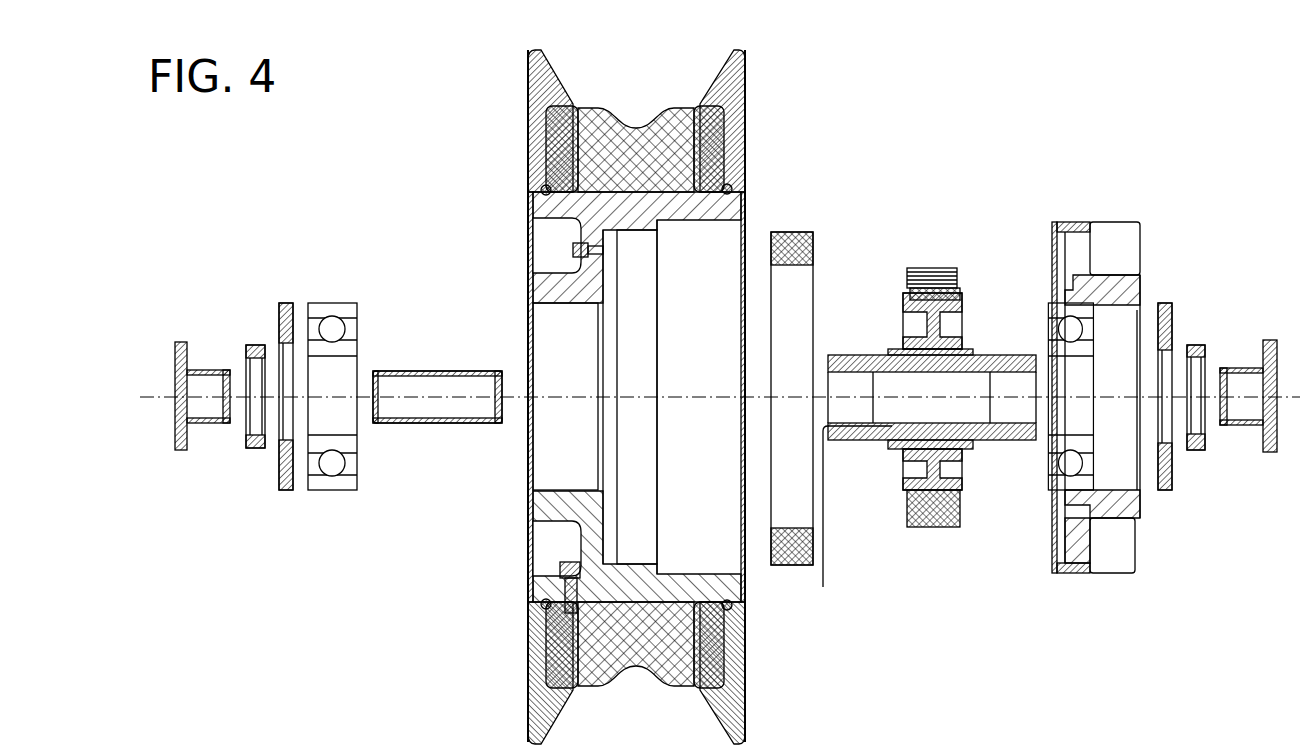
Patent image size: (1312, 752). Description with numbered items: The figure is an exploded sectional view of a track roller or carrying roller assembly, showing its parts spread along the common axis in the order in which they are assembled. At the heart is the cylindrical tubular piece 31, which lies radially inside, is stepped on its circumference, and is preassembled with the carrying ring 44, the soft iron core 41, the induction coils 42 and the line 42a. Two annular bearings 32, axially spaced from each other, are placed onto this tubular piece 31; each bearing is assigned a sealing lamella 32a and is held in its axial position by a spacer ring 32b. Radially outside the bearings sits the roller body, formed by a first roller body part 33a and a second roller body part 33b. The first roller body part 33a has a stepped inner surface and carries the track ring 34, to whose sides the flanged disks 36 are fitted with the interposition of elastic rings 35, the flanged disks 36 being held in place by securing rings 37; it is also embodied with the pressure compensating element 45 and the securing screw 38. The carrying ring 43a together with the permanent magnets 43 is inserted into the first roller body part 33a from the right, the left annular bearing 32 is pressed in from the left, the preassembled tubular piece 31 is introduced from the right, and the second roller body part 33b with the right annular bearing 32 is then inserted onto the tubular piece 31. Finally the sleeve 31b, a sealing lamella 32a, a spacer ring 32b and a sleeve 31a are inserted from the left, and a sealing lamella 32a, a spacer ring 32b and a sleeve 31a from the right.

The cylindrical tubular piece 31 is at (1003, 357).
The sleeve 31a is at (180, 455).
The sleeve 31b is at (433, 425).
The annular bearing 32 is at (333, 492).
The sealing lamella 32a is at (285, 493).
The spacer ring 32b is at (255, 450).
The first roller body part 33a is at (545, 212).
The second roller body part 33b is at (1066, 575).
The track ring 34 is at (629, 125).
The elastic ring 35 is at (548, 138).
The flanged disk 36 is at (525, 86).
The securing ring 37 is at (541, 190).
The securing screw 38 is at (560, 597).
The soft iron core 41 is at (960, 290).
The induction coil 42 is at (957, 270).
The line 42a is at (825, 548).
The permanent magnet 43 is at (819, 389).
The carrying ring 43a is at (813, 232).
The carrying ring 44 is at (942, 323).
The pressure compensating element 45 is at (572, 251).